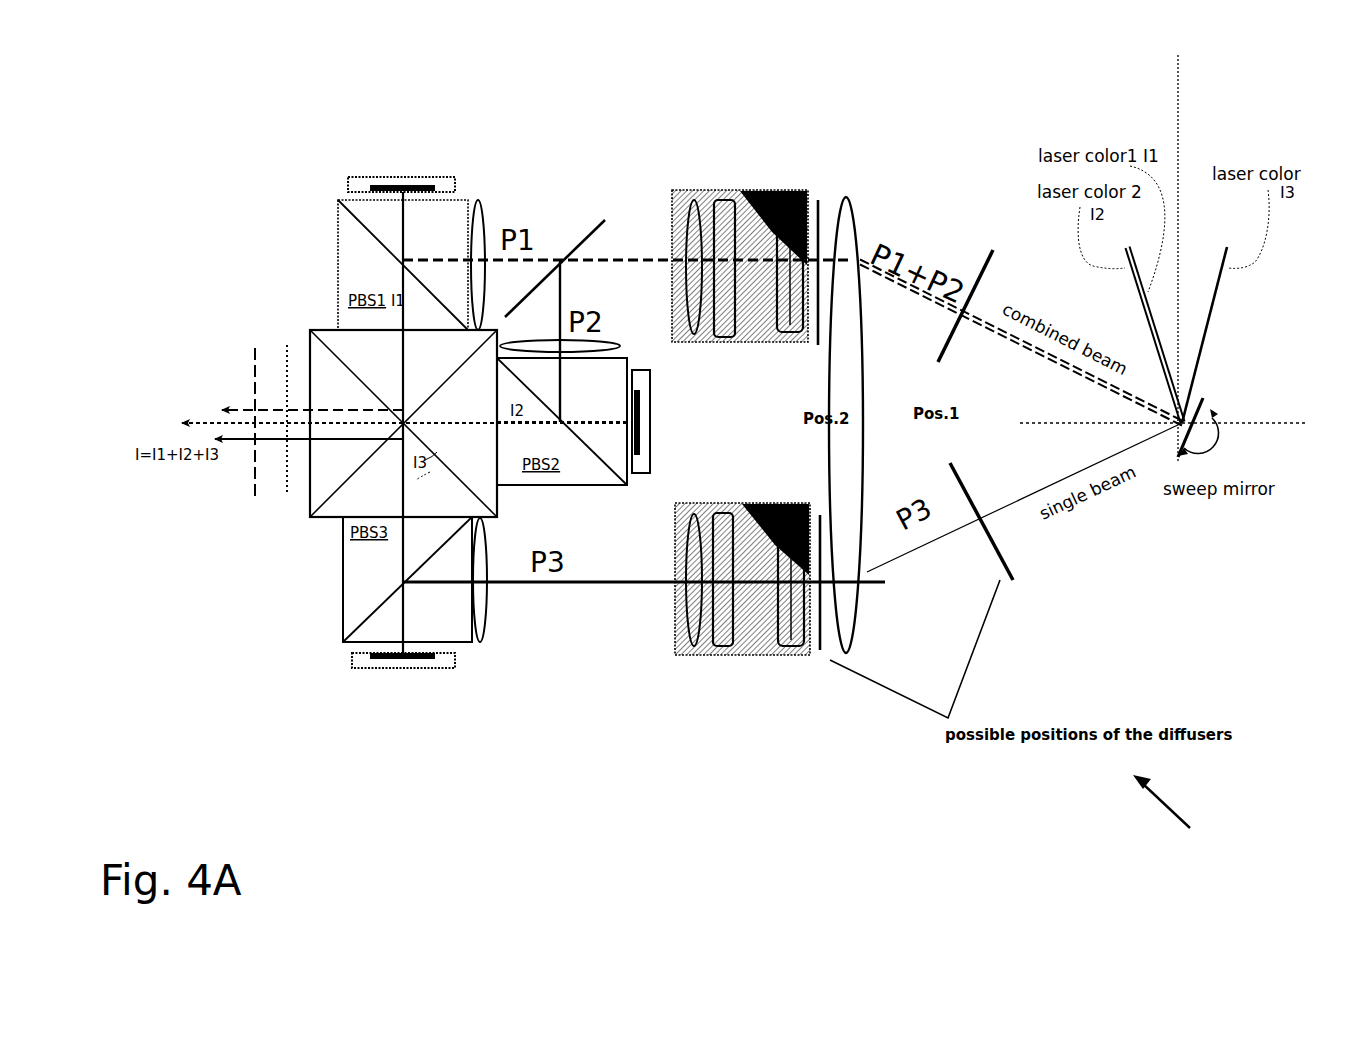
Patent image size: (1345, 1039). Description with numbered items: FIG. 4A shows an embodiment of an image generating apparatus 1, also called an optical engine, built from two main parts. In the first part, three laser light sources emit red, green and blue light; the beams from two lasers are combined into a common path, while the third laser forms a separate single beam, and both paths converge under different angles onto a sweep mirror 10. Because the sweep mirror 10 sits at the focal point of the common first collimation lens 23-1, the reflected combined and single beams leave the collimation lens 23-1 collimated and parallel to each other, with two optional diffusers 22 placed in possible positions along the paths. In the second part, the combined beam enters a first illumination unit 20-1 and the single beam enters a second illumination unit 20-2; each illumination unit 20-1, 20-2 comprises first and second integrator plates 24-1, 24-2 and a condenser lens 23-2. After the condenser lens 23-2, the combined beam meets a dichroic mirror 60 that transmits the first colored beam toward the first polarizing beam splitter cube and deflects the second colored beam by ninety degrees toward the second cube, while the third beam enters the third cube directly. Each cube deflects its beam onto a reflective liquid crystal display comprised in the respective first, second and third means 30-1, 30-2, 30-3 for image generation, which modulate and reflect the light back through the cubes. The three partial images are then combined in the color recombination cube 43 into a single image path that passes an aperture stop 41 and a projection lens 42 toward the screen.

The projection display system 1 is at (1163, 812).
The sweep mirror 10 is at (1198, 398).
The first illumination unit 20-1 is at (708, 390).
The second illumination unit 20-2 is at (675, 641).
The diffuser 22 is at (992, 260).
The first collimation lens 23-1 is at (858, 223).
The condenser lens 23-2 is at (672, 292).
The first integrator plate 24-1 is at (798, 500).
The second integrator plate 24-2 is at (738, 500).
The first means for image generation 30-1 is at (362, 188).
The second means for image generation 30-2 is at (668, 495).
The third means for image generation 30-3 is at (368, 662).
The aperture stop 41 is at (285, 365).
The projection lens 42 is at (253, 373).
The color recombination cube 43 is at (403, 423).
The dichroic mirror 60 is at (587, 224).